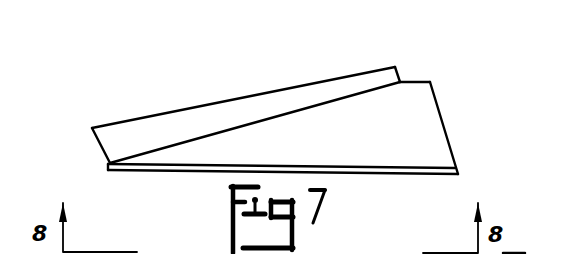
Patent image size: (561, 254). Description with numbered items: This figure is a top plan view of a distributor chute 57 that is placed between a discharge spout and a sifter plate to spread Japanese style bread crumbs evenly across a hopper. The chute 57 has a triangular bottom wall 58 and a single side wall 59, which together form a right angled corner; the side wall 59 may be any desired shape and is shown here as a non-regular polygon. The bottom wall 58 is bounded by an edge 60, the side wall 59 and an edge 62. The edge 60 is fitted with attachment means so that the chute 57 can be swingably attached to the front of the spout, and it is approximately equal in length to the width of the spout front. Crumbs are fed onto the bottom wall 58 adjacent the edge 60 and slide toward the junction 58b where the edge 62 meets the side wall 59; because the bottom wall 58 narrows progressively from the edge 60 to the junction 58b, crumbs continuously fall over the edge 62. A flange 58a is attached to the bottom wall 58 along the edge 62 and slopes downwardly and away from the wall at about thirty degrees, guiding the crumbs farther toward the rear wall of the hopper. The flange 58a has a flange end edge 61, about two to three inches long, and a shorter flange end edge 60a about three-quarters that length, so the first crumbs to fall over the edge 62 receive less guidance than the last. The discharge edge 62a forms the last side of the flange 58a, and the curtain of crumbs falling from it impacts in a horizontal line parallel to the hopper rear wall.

The distributor chute 57 is at (441, 77).
The bottom wall 58 is at (422, 113).
The flange 58a is at (163, 130).
The junction 58b is at (110, 168).
The side wall 59 is at (383, 175).
The edge 60 is at (447, 140).
The flange end edge 60a is at (400, 73).
The flange end edge 61 is at (100, 150).
The edge 62 is at (322, 104).
The discharge edge 62a is at (258, 96).